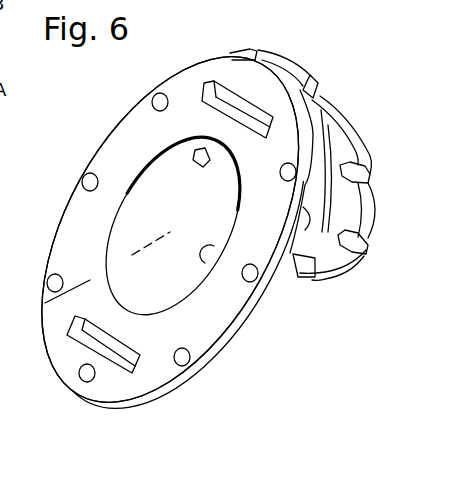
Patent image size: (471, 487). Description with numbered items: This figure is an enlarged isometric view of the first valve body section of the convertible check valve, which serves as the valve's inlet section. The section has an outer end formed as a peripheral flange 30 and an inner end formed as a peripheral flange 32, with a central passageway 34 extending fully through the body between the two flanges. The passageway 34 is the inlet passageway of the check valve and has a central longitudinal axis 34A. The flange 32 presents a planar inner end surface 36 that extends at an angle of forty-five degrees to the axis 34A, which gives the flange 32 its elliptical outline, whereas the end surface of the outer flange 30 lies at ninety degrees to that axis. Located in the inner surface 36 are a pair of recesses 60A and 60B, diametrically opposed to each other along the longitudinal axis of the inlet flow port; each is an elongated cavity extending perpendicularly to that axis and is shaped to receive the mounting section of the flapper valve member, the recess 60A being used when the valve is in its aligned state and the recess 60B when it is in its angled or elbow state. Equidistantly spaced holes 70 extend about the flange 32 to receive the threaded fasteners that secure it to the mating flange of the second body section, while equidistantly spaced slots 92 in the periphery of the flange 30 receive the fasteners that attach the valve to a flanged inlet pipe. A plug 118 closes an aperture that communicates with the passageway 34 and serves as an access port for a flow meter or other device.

The peripheral flange 30 is at (322, 257).
The peripheral flange 32 is at (162, 392).
The central passageway 34 is at (160, 198).
The central longitudinal axis 34A is at (90, 280).
The planar inner end surface 36 is at (141, 133).
The recess 60A is at (214, 98).
The recess 60B is at (72, 337).
The holes 70 is at (252, 283).
The slots 92 is at (356, 160).
The plug 118 is at (200, 149).